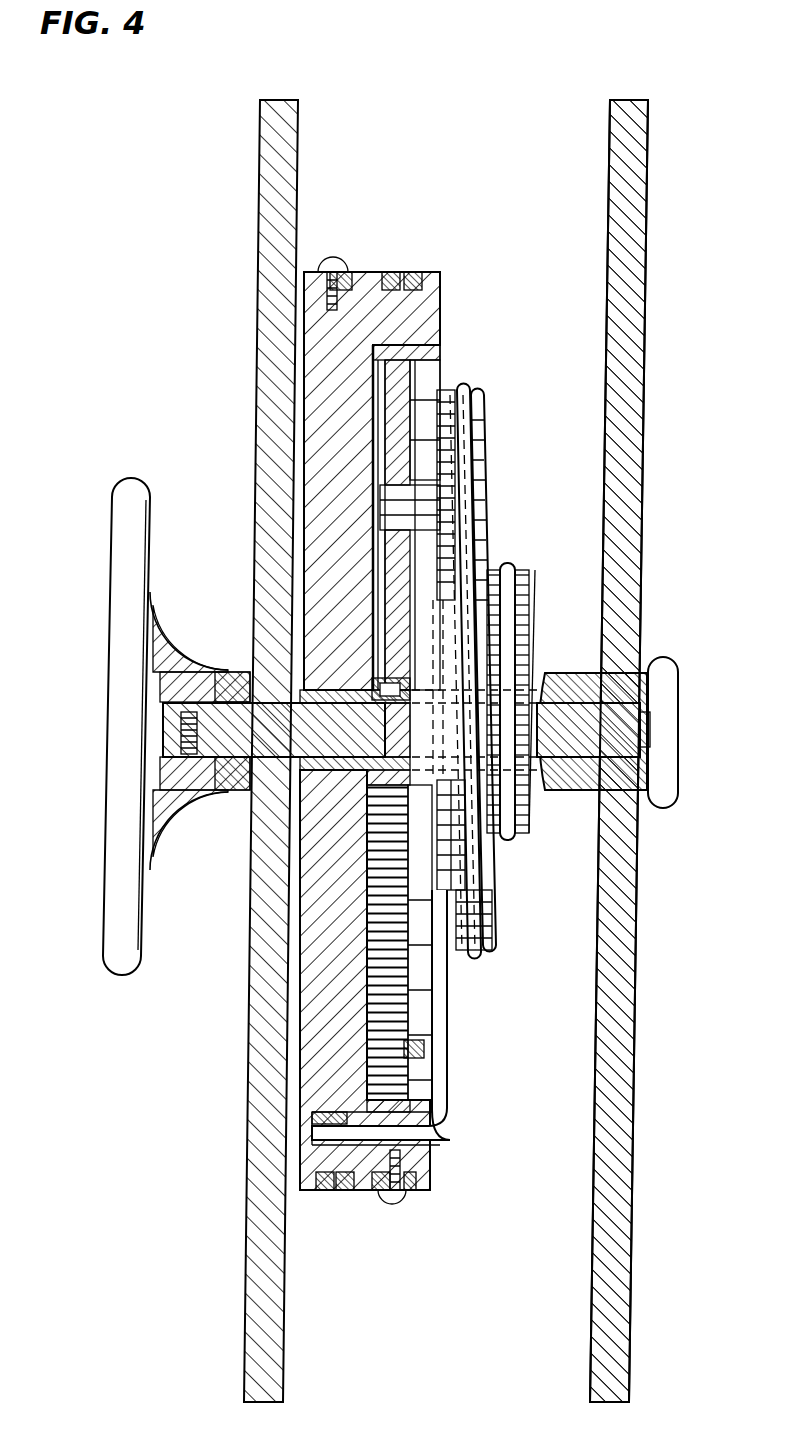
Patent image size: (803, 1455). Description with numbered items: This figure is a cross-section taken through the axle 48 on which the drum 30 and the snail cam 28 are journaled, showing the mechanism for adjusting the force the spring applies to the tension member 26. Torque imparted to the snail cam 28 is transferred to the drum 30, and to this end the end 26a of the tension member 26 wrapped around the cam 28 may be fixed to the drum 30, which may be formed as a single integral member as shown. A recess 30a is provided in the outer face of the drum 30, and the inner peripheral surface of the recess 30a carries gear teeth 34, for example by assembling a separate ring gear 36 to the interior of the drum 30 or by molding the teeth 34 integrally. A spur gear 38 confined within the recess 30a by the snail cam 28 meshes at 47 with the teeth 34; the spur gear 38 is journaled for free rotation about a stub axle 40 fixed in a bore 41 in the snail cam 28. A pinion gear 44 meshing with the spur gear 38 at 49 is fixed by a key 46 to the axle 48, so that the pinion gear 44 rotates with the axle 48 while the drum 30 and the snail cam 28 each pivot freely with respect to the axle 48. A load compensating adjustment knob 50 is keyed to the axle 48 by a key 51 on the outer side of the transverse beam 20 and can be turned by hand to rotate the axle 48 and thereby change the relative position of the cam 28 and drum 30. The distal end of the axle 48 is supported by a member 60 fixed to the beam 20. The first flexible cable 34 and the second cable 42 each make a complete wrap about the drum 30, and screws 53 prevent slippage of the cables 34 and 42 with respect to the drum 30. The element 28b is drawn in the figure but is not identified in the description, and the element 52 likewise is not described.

The transverse beam 20 is at (246, 1308).
The tension member 26 is at (510, 832).
The end of tension member 26a is at (310, 1158).
The snail cam 28 is at (492, 907).
The spring 28b is at (372, 945).
The drum 30 is at (436, 270).
The recess 30a is at (441, 330).
The first flexible cable 34 is at (352, 270).
The pulley 36 is at (441, 1087).
The spur gear 38 is at (416, 392).
The stub axle 40 is at (457, 485).
The bore 41 is at (470, 505).
The second cable 42 is at (407, 270).
The pinion gear 44 is at (375, 688).
The key 46 is at (385, 722).
The meshing point 47 is at (378, 358).
The axle 48 is at (205, 672).
The meshing point 49 is at (440, 695).
The load compensating adjustment knob 50 is at (110, 636).
The key 51 is at (190, 760).
The screw 52 is at (333, 268).
The screws 53 is at (398, 1197).
The support member 60 is at (646, 278).